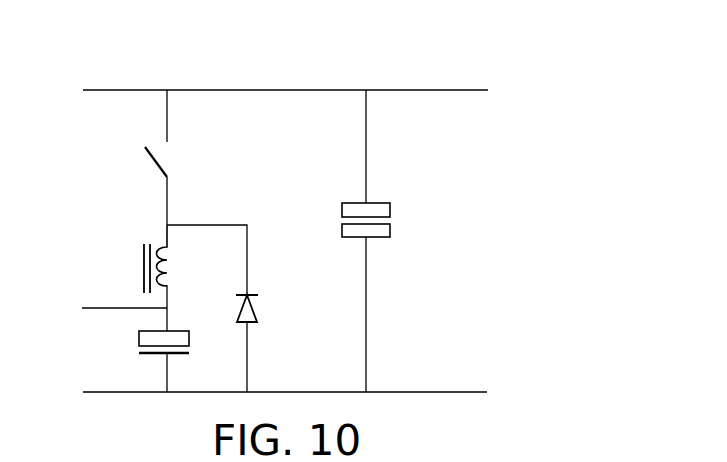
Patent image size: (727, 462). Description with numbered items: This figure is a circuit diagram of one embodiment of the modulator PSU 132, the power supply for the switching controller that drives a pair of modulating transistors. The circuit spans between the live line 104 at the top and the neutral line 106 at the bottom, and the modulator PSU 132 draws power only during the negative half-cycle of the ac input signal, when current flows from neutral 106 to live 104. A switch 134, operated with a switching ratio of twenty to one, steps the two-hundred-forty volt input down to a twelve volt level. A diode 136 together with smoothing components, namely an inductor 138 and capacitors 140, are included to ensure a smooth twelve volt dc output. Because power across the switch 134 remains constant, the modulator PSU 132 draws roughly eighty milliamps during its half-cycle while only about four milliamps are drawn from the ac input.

The live line 104 is at (287, 90).
The neutral line 106 is at (287, 392).
The modulator PSU 132 is at (338, 240).
The switch 134 is at (176, 158).
The diode 136 is at (264, 308).
The inductor 138 is at (137, 261).
The capacitors 140 is at (131, 339).